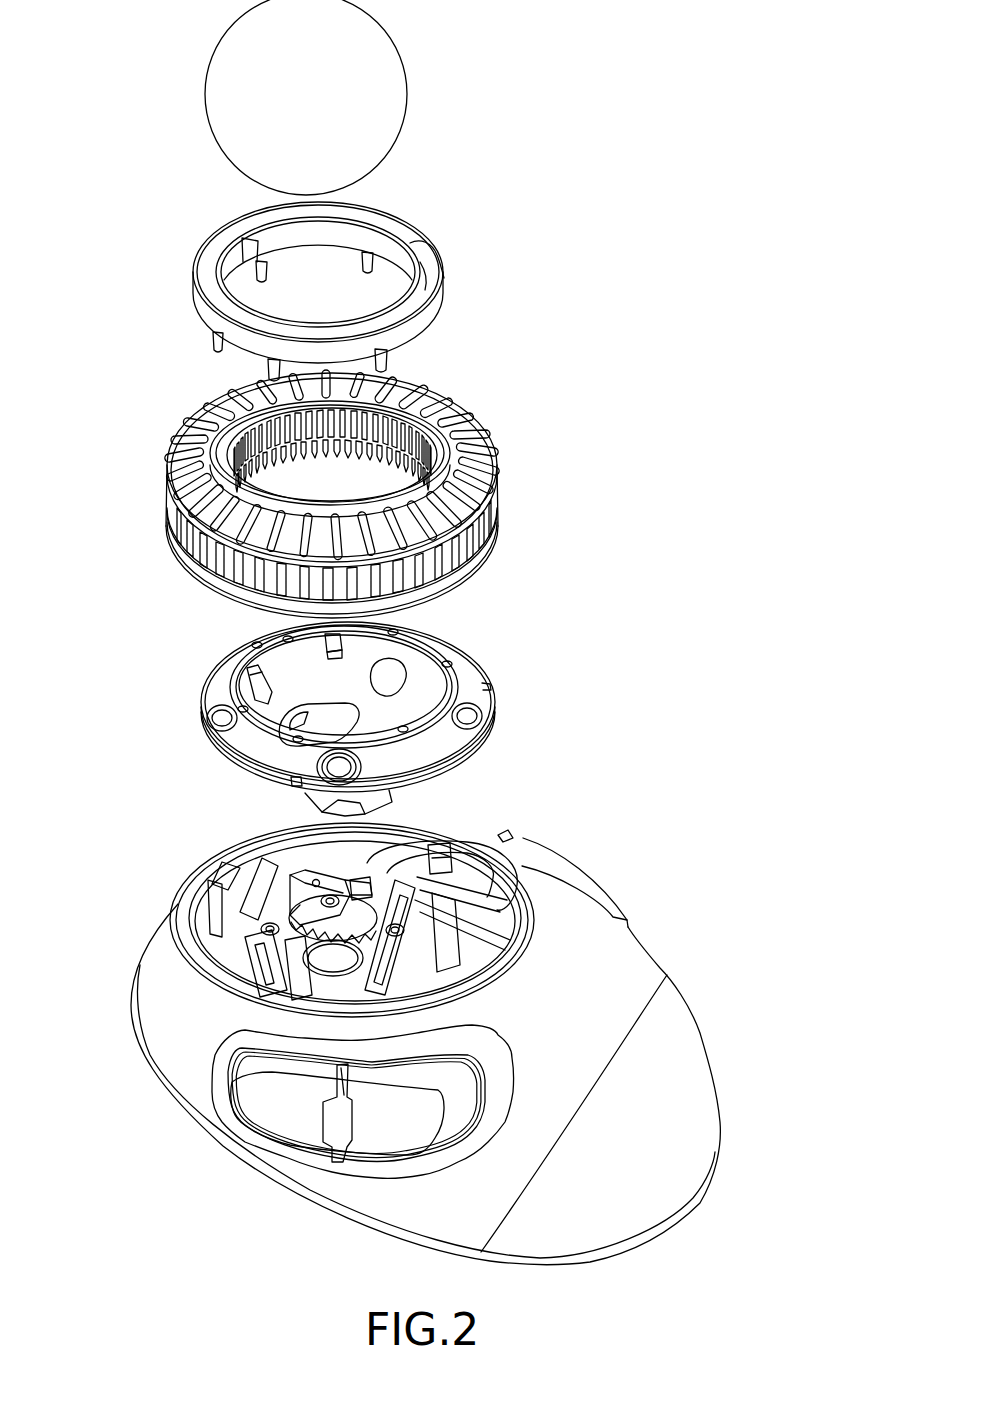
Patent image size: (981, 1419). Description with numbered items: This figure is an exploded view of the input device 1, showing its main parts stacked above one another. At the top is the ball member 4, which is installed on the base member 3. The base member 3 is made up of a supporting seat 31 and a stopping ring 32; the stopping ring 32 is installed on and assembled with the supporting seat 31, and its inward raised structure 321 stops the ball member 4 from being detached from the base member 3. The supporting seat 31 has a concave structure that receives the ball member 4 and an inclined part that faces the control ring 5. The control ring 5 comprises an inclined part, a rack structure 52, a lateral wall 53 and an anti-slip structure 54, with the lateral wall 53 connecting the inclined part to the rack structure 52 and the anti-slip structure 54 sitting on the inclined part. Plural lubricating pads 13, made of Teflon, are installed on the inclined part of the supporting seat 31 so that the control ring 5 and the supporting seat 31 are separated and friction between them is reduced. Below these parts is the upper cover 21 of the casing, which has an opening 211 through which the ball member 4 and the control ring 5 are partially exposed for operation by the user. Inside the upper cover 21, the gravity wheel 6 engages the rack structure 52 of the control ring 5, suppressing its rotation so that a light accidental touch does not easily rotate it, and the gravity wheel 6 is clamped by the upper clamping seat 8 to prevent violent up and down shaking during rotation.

The input device 1 is at (580, 88).
The ball member 4 is at (382, 62).
The base member 3 is at (580, 372).
The supporting seat 31 is at (339, 719).
The stopping ring 32 is at (351, 291).
The inward raised structure 321 is at (420, 272).
The control ring 5 is at (334, 503).
The rack structure 52 is at (457, 572).
The lateral wall 53 is at (490, 520).
The anti-slip structure 54 is at (470, 467).
The lubricating pads 13 is at (470, 718).
The upper cover 21 is at (425, 1042).
The opening 211 is at (505, 860).
The gravity wheel 6 is at (338, 900).
The upper clamping seat 8 is at (300, 905).